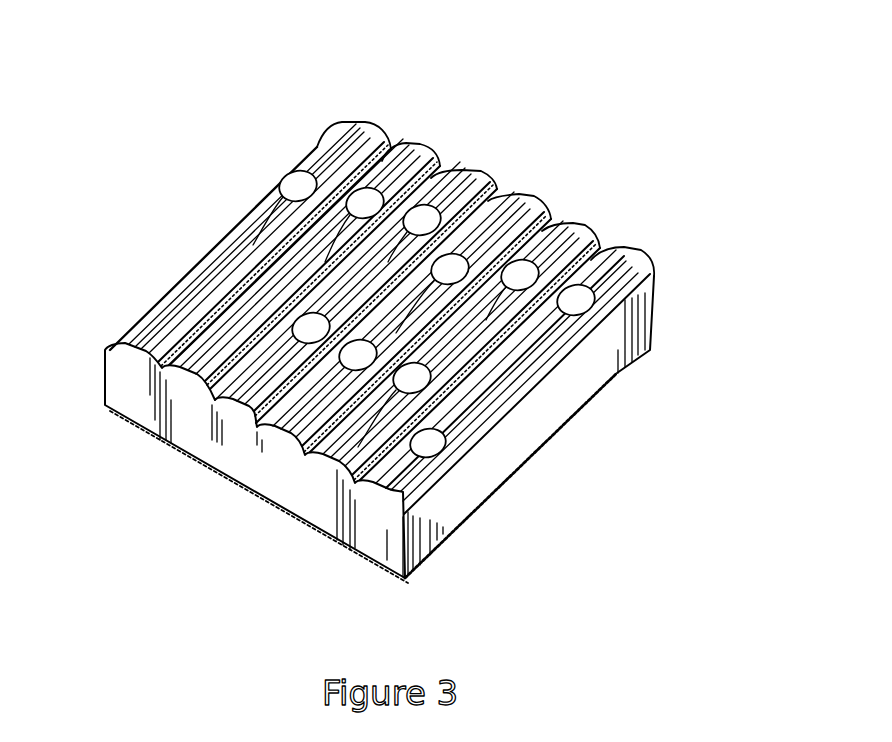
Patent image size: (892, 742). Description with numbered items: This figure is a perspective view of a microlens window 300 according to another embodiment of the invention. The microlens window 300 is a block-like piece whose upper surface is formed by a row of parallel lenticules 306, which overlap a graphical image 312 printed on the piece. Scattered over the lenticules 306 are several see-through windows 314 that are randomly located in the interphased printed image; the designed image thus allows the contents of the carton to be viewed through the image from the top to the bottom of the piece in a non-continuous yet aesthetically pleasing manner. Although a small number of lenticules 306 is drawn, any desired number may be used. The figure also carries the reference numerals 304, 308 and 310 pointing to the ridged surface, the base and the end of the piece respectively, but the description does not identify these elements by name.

The microlens window 300 is at (382, 314).
The ridged top surface 304 is at (419, 273).
The lenticules 306 is at (330, 144).
The base layer 308 is at (104, 405).
The end ridge 310 is at (620, 251).
The graphical image 312 is at (222, 473).
The see-through windows 314 is at (283, 199).